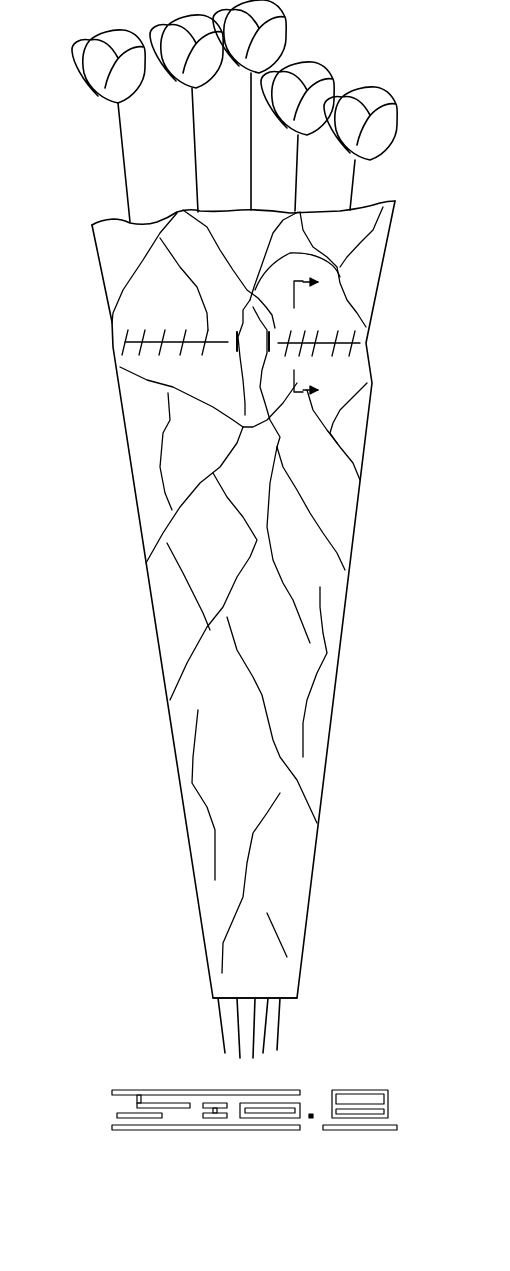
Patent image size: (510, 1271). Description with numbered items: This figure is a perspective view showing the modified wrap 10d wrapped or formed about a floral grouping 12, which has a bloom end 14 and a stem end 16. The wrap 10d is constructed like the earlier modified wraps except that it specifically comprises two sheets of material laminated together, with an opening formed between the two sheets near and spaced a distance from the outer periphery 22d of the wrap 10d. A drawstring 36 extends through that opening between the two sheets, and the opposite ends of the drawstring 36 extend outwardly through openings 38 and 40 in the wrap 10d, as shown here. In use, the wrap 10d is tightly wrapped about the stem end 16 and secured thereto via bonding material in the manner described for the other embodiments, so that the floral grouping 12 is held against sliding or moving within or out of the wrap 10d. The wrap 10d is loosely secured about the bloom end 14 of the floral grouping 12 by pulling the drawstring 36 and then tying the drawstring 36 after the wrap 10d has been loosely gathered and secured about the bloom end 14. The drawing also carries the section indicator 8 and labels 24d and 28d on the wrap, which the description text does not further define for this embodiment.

The wrap 10d is at (362, 493).
The floral grouping 12 is at (112, 173).
The bloom end 14 is at (350, 74).
The stem end 16 is at (207, 1010).
The outer periphery 22d is at (386, 200).
The lower open end of sleeve 24d is at (291, 1000).
The sleeve side wall panel 28d is at (297, 603).
The drawstring 36 is at (246, 383).
The opening 38 is at (244, 316).
The opening 40 is at (311, 252).
The section line 8- 8 is at (316, 337).